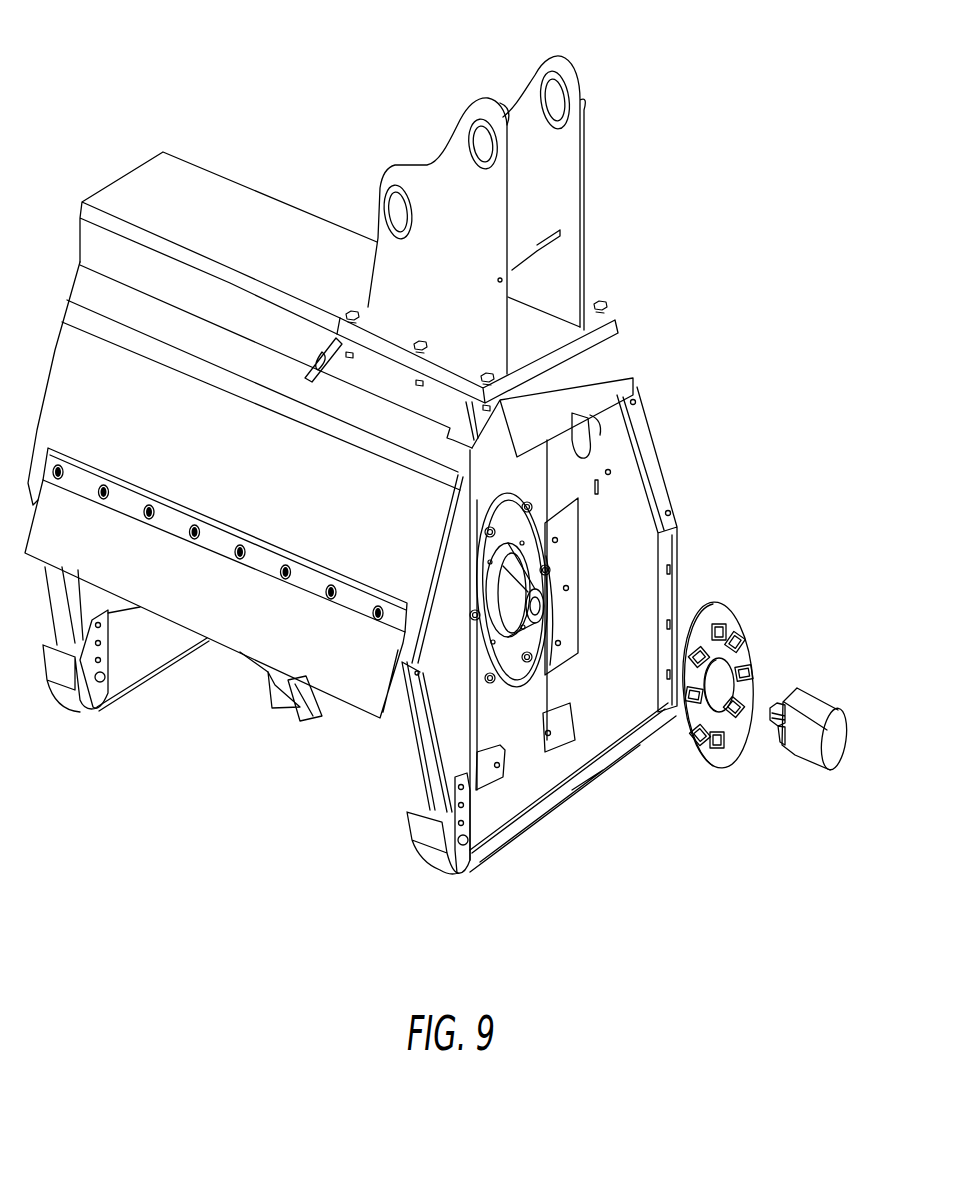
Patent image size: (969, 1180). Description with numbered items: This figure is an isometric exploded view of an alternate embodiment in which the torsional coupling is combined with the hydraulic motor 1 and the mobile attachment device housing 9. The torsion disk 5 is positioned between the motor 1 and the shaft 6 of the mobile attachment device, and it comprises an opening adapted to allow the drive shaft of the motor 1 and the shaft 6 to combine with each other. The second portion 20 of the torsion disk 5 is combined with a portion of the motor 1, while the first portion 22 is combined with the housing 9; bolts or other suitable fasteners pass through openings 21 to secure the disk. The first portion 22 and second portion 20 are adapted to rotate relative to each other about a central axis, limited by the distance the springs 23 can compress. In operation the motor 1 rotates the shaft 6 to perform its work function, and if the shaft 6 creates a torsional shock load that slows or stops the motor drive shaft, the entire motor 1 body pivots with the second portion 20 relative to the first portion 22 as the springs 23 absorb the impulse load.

The hydraulic motor 1 is at (822, 690).
The torsional coupling 5 is at (755, 617).
The shaft 6 is at (533, 618).
The mobile attachment device housing 9 is at (630, 503).
The second portion 20 is at (708, 720).
The openings 21 is at (716, 628).
The first portion 22 is at (729, 603).
The springs 23 is at (716, 712).